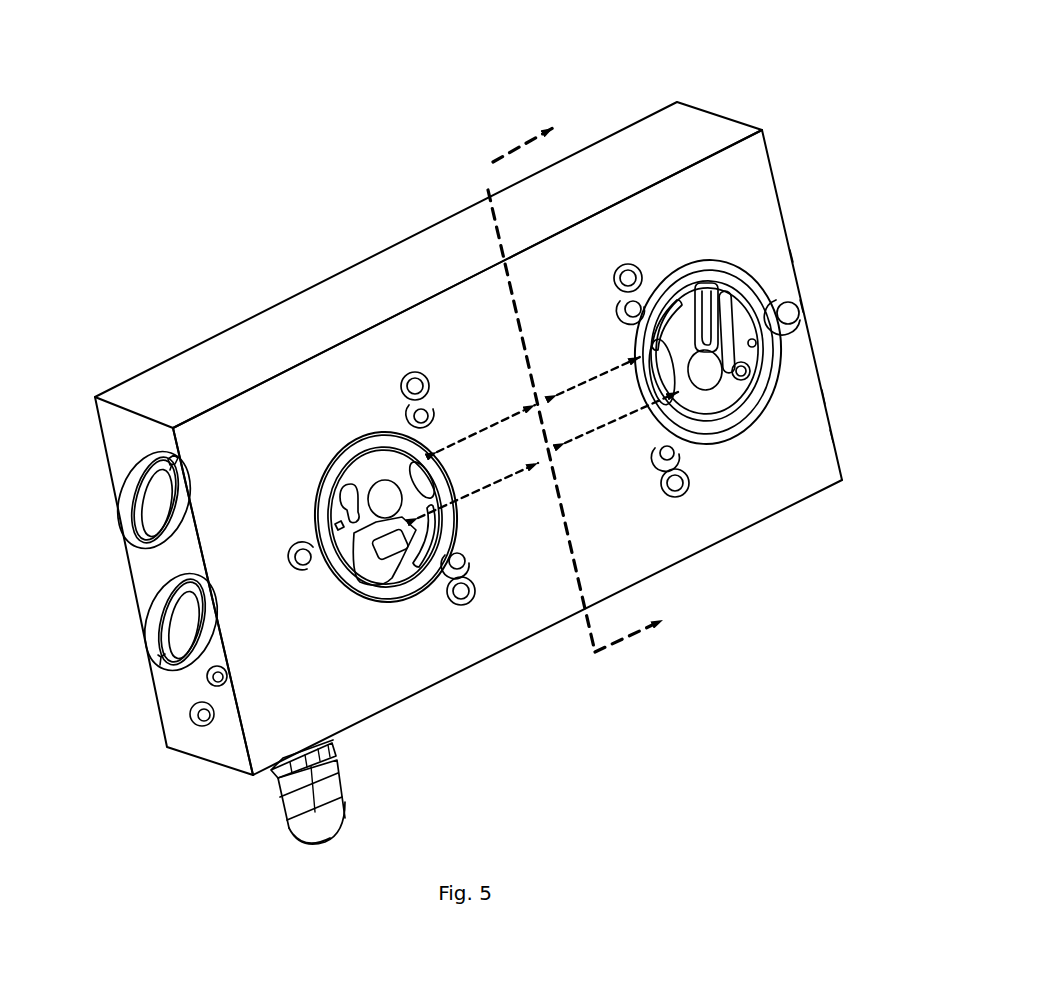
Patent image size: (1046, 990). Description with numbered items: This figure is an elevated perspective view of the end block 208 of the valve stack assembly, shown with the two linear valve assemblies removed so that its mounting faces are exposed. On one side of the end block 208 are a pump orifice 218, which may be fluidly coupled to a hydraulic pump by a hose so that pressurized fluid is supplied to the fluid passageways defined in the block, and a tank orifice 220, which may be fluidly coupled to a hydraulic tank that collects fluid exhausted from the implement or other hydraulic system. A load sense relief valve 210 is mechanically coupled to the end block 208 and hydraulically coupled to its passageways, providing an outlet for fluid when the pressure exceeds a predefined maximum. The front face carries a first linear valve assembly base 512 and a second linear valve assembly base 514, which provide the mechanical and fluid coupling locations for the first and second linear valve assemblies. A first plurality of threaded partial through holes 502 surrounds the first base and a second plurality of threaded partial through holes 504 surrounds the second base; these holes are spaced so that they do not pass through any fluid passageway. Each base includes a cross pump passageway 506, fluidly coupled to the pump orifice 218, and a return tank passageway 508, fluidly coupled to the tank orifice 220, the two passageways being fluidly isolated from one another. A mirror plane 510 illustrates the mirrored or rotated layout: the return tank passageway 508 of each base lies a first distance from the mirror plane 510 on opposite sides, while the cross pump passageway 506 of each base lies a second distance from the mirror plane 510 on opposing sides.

The end block 208 is at (468, 438).
The load sense relief valve 210 is at (327, 802).
The pump orifice 218 is at (168, 495).
The tank orifice 220 is at (193, 618).
The first plurality of threaded partial through holes 502 is at (421, 409).
The second plurality of threaded partial through holes 504 is at (633, 307).
The cross pump passageway 506 is at (397, 578).
The return tank passageway 508 is at (424, 496).
The mirror plane 510 is at (493, 162).
The first linear valve assembly base 512 is at (305, 416).
The second linear valve assembly base 514 is at (712, 185).